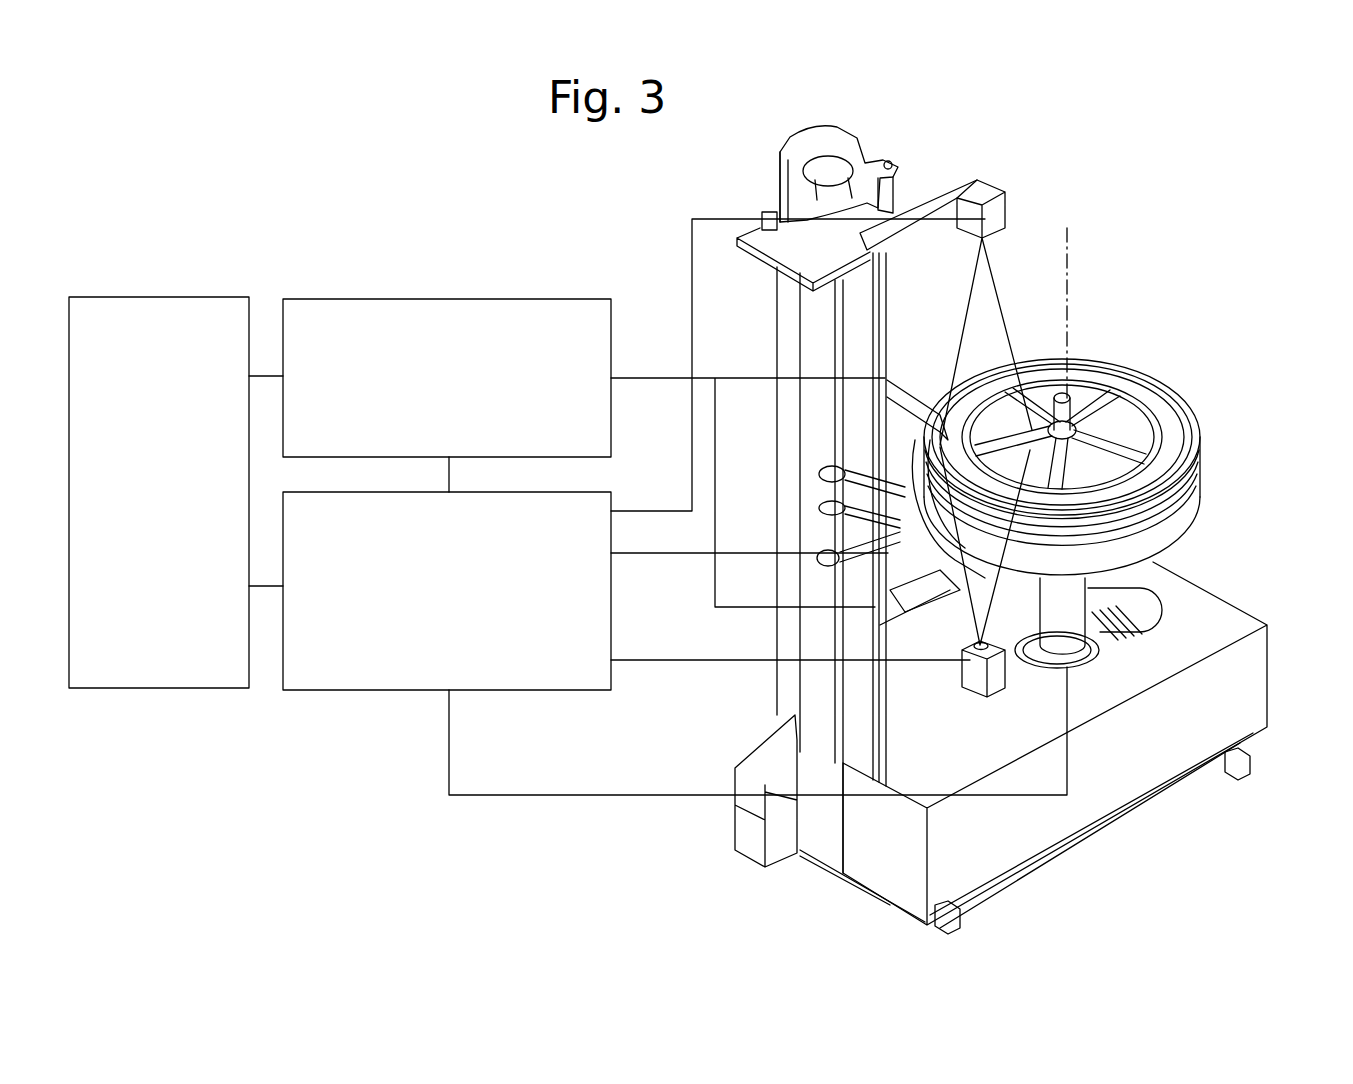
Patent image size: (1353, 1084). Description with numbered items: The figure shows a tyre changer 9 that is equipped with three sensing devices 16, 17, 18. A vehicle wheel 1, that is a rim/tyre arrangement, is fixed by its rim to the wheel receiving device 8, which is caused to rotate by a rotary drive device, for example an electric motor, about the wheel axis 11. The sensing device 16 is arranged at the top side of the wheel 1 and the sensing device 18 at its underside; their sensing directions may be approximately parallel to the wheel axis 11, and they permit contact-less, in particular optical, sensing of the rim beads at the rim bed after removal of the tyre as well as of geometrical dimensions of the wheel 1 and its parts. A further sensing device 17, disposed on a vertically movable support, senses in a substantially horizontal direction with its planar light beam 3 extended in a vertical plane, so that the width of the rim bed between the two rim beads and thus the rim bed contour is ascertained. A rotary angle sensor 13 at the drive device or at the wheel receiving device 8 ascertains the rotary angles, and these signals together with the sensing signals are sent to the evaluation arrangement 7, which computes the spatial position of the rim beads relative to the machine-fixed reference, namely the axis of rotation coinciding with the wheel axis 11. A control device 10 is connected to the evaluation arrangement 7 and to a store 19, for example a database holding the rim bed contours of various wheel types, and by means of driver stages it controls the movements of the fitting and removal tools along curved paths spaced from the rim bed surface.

The vehicle wheel 1 is at (1113, 348).
The planar light beam 3 is at (993, 313).
The evaluation arrangement 7 is at (400, 675).
The wheel receiving device 8 is at (1062, 618).
The tyre changer 9 is at (1242, 497).
The control device 10 is at (454, 298).
The wheel axis 11 is at (1068, 245).
The rotary angle sensor 13 is at (1073, 653).
The sensing device 16 is at (997, 210).
The sensing device 17 is at (870, 540).
The sensing device 18 is at (1000, 680).
The store 19 is at (151, 667).